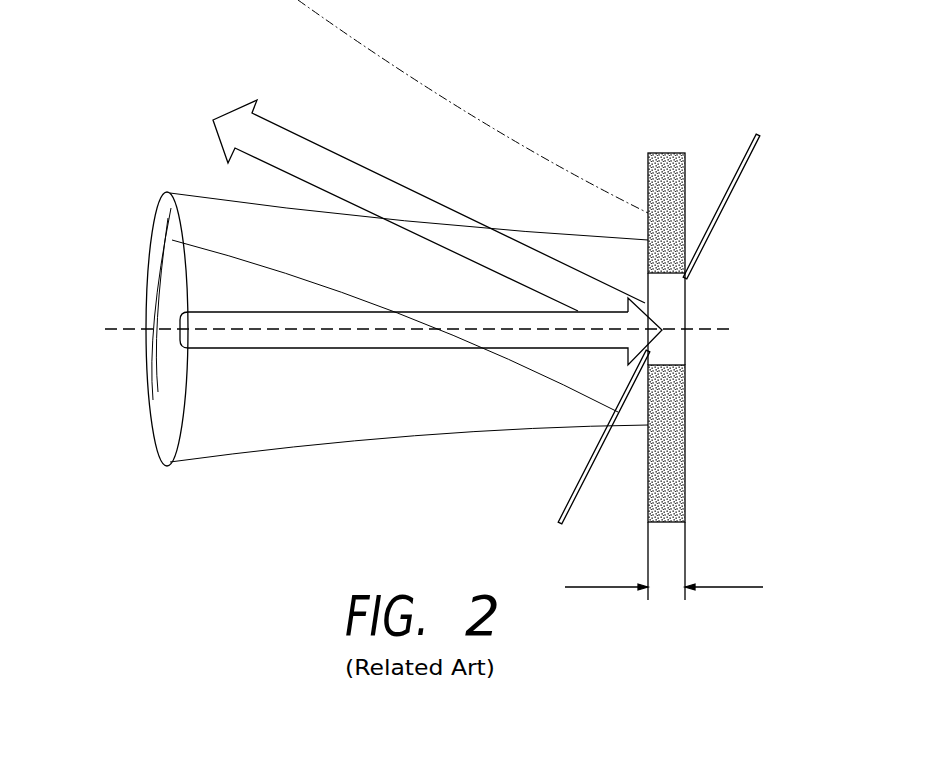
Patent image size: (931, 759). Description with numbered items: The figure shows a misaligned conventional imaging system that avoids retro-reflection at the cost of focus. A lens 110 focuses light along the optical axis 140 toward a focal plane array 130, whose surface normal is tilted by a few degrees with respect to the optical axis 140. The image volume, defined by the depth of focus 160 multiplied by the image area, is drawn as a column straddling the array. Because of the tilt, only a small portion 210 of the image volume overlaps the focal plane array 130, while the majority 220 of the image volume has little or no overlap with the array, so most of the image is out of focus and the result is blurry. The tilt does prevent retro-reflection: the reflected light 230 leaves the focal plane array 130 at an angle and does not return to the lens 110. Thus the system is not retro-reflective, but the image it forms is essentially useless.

The lens 110 is at (160, 197).
The focal plane array 130 is at (735, 193).
The optical axis 140 is at (105, 328).
The depth of focus 160 is at (732, 587).
The small portion of the image volume 210 is at (687, 311).
The majority of the image volume 220 is at (687, 162).
The reflected light 230 is at (232, 112).